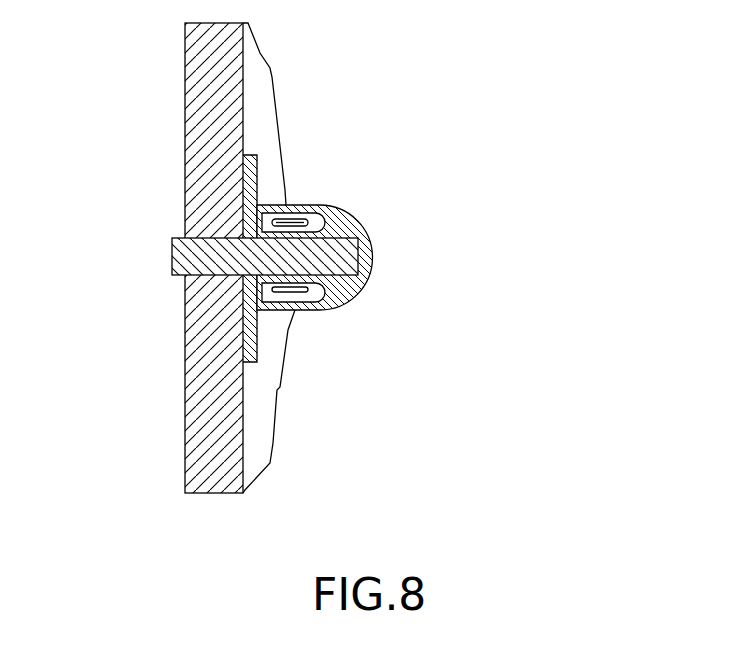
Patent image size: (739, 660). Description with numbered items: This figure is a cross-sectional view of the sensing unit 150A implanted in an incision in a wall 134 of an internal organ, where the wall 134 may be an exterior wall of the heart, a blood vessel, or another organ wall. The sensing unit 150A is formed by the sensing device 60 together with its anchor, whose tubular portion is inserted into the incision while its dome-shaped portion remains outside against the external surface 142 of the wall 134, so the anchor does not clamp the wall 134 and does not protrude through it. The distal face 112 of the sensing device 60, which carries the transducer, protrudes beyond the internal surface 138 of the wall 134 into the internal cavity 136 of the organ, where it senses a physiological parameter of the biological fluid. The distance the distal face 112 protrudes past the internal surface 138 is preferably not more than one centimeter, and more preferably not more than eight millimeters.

The wall 134 is at (203, 118).
The distal face 112 is at (175, 248).
The internal cavity 136 is at (85, 278).
The sensing device 60 is at (175, 273).
The internal surface 138 is at (190, 371).
The external surface 142 is at (260, 425).
The sensing unit 150A is at (392, 254).